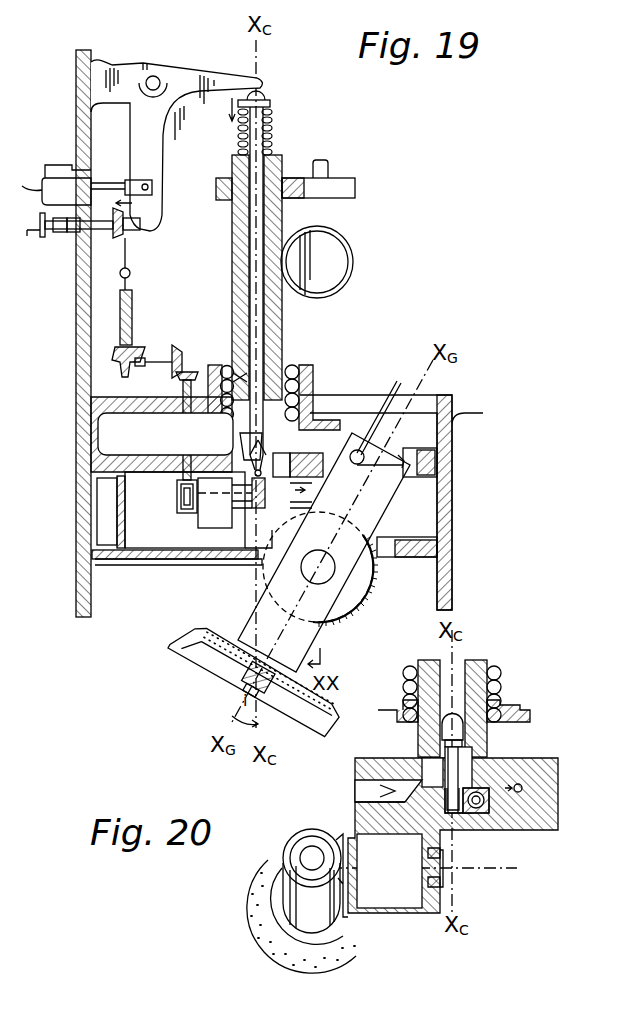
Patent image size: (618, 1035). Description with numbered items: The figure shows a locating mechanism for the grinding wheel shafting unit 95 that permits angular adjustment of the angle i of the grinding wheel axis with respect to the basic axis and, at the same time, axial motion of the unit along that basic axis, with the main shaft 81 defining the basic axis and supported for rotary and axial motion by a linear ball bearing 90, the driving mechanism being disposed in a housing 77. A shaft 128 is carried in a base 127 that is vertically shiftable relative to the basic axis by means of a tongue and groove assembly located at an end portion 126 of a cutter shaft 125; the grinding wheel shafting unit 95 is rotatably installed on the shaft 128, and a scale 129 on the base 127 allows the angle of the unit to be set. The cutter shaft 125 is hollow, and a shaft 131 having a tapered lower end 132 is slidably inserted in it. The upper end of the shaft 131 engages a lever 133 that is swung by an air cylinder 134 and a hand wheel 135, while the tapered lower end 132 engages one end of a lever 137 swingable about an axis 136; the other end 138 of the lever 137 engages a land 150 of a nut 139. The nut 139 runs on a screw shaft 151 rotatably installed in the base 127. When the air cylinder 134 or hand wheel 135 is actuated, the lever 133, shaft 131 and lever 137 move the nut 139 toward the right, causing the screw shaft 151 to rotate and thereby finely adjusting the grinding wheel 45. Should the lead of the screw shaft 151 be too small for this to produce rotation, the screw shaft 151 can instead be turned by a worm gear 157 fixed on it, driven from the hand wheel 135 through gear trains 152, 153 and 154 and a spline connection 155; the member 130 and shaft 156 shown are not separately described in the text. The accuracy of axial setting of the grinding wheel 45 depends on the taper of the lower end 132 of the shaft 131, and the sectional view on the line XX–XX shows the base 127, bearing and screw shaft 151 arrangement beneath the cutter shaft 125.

In FIG. 19, the grinding wheel 45 is at (178, 642).
In FIG. 20, the grinding wheel 45 is at (246, 910).
In FIG. 19, the housing 77 is at (76, 352).
In FIG. 19, the main shaft 81 is at (92, 470).
In FIG. 19, the linear ball bearing 90 is at (226, 364).
In FIG. 19, the grinding wheel shafting unit 95 is at (398, 492).
In FIG. 20, the grinding wheel shafting unit 95 is at (287, 845).
In FIG. 19, the cutter shaft 125 is at (238, 275).
In FIG. 20, the cutter shaft 125 is at (482, 668).
In FIG. 20, the end portion 126 is at (550, 758).
In FIG. 19, the base 127 is at (250, 527).
In FIG. 20, the base 127 is at (540, 830).
In FIG. 19, the shaft 128 is at (348, 612).
In FIG. 20, the shaft 128 is at (475, 872).
In FIG. 19, the scale 129 is at (370, 590).
In FIG. 20, the wedge member 130 is at (390, 782).
In FIG. 19, the shaft 131 is at (270, 126).
In FIG. 20, the shaft 131 is at (456, 668).
In FIG. 19, the tapered lower end 132 is at (248, 428).
In FIG. 19, the lever 133 is at (186, 100).
In FIG. 19, the air cylinder 134 is at (62, 172).
In FIG. 19, the hand wheel 135 is at (27, 236).
In FIG. 19, the axis 136 is at (330, 420).
In FIG. 19, the lever 137 is at (297, 418).
In FIG. 20, the lever 137 is at (466, 763).
In FIG. 19, the other end 138 is at (250, 540).
In FIG. 19, the nut 139 is at (295, 475).
In FIG. 20, the nut 139 is at (485, 815).
In FIG. 19, the land 150 is at (292, 582).
In FIG. 19, the screw shaft 151 is at (245, 540).
In FIG. 20, the screw shaft 151 is at (470, 818).
In FIG. 19, the gear train 152 is at (130, 240).
In FIG. 19, the gear train 153 is at (140, 355).
In FIG. 19, the gear train 154 is at (174, 382).
In FIG. 19, the spline connection 155 is at (133, 305).
In FIG. 19, the shaft 156 is at (181, 386).
In FIG. 19, the worm gear 157 is at (177, 506).